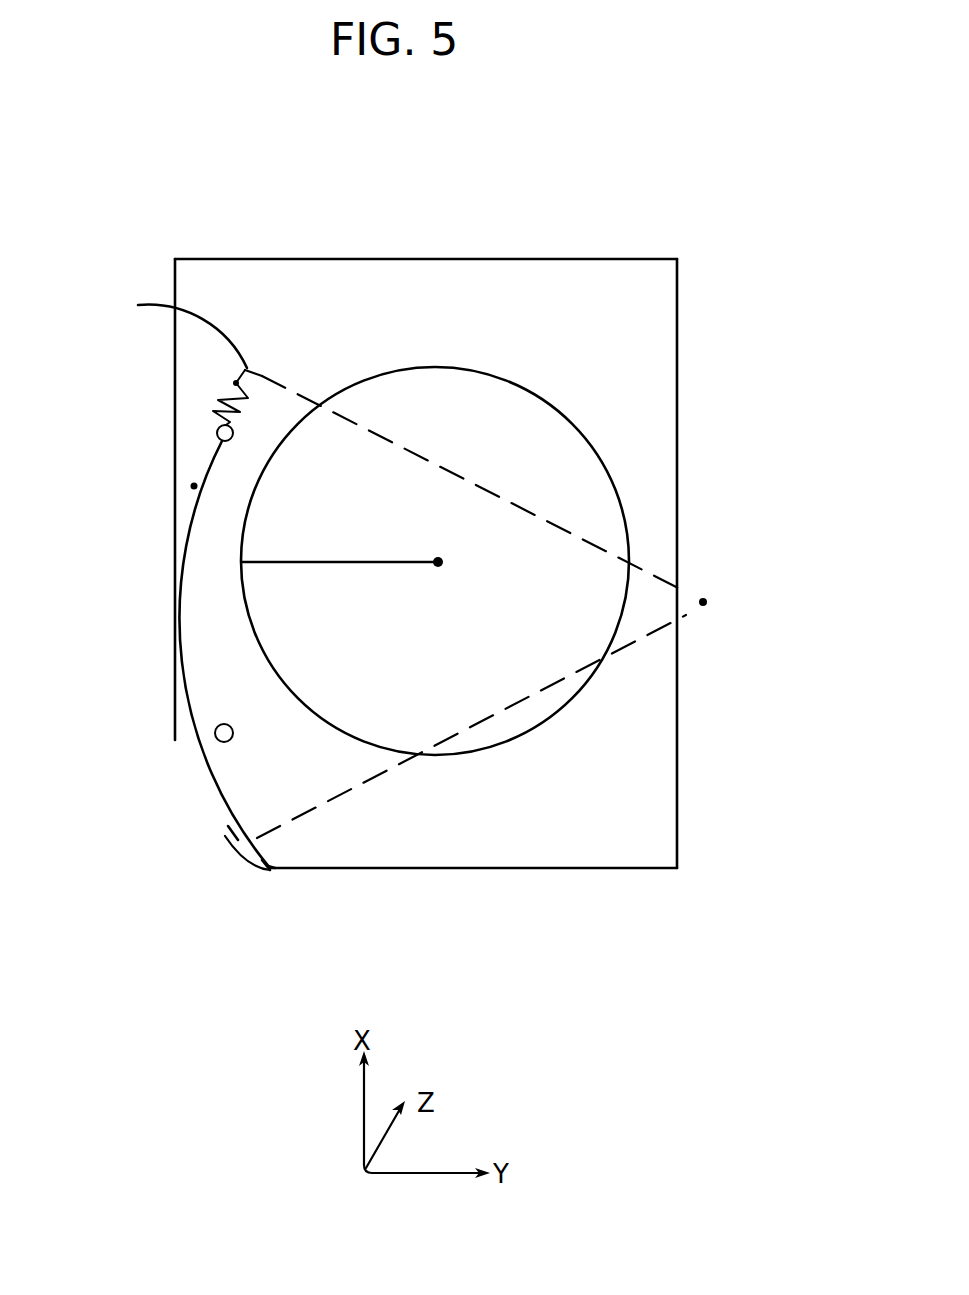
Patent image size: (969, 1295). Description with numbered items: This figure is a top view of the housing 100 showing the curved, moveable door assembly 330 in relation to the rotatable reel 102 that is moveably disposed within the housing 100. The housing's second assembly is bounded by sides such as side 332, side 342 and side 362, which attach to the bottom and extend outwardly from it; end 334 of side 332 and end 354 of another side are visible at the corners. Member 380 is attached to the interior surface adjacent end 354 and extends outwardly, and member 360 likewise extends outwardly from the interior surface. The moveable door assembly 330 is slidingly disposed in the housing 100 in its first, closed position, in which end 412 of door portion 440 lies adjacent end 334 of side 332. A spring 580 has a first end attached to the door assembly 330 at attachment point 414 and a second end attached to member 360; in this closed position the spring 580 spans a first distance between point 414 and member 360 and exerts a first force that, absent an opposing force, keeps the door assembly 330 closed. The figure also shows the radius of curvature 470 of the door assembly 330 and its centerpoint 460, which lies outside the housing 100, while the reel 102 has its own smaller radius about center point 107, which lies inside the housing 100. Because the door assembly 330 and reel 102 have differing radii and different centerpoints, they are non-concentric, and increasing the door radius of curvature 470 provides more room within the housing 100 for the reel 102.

The housing 100 is at (578, 995).
The rotatable reel 102 is at (547, 403).
The center point 107 is at (362, 564).
The moveable door assembly 330 is at (233, 834).
The side 332 is at (443, 870).
The end of side 334 is at (272, 869).
The side 342 is at (420, 259).
The end of side 354 is at (179, 740).
The member 360 is at (217, 434).
The side 362 is at (678, 478).
The member 380 is at (217, 739).
The end of door portion 412 is at (262, 873).
The attachment point 414 is at (194, 486).
The door portion 440 is at (225, 836).
The centerpoint 460 is at (703, 602).
The radius of curvature 470 is at (620, 648).
The spring 580 is at (218, 400).